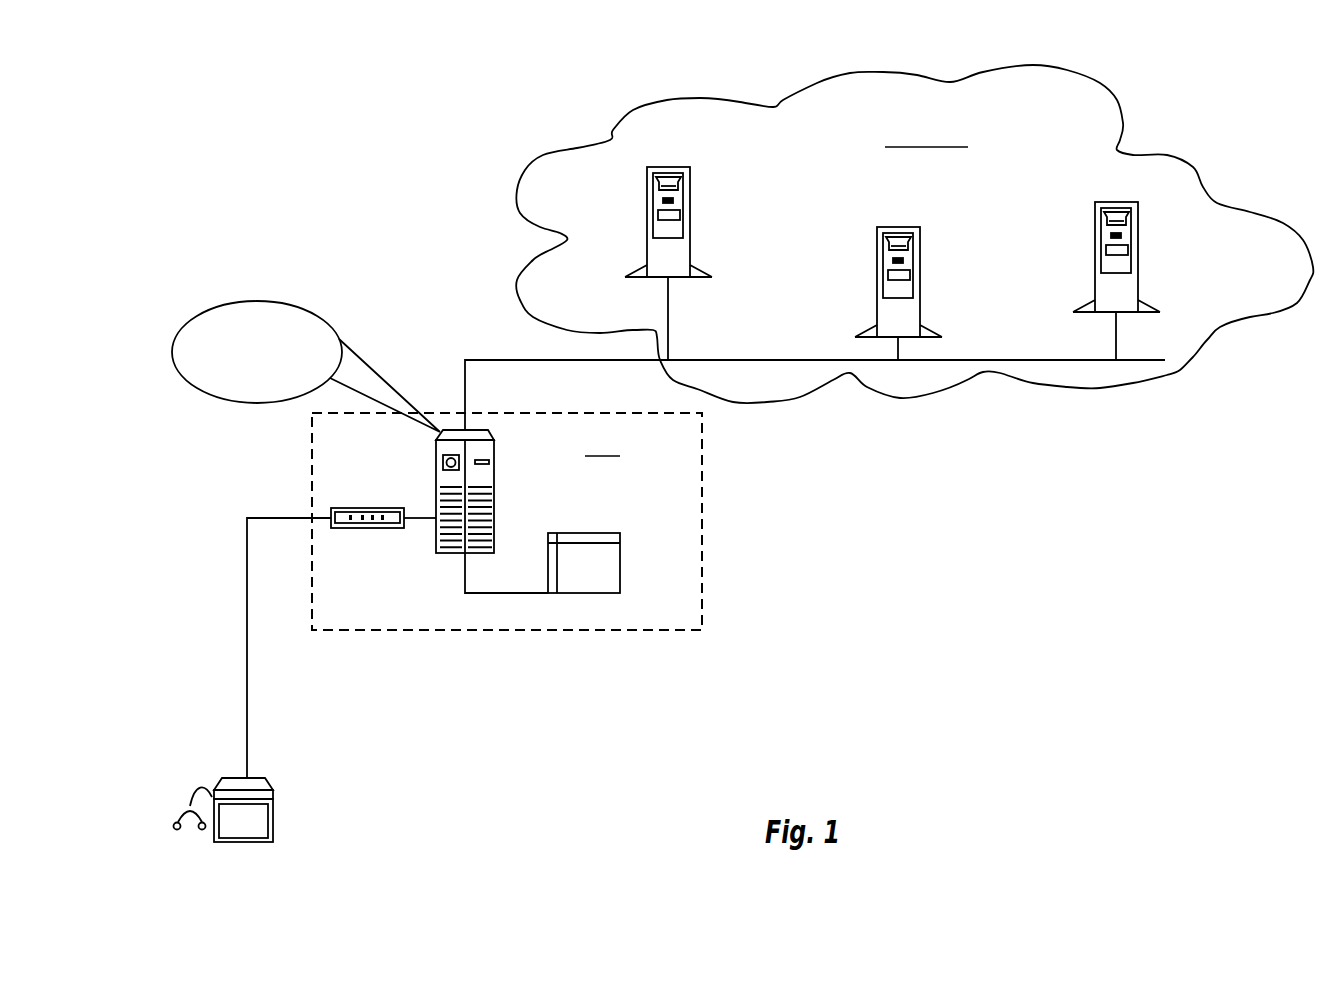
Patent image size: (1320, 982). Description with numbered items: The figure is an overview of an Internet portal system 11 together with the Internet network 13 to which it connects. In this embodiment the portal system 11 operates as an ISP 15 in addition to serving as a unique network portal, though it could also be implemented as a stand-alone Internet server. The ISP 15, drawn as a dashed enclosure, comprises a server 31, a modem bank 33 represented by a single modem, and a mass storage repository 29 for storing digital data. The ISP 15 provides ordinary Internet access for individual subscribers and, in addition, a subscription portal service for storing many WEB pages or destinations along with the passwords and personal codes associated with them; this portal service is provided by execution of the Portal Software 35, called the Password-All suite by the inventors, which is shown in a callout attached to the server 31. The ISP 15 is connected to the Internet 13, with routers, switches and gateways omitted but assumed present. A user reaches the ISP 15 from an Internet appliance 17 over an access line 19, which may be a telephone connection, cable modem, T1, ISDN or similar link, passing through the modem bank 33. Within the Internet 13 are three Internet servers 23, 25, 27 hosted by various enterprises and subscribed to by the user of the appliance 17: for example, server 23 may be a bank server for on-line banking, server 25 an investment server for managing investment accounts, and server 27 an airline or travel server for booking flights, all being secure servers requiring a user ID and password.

The Internet portal system 11 is at (358, 208).
The Internet network 13 is at (1180, 137).
The ISP 15 is at (703, 567).
The Internet appliance 17 is at (273, 825).
The access line 19 is at (247, 645).
The Internet server 23 is at (690, 238).
The Internet server 25 is at (920, 293).
The Internet server 27 is at (1138, 272).
The mass storage repository 29 is at (620, 573).
The server 31 is at (436, 502).
The modem bank 33 is at (341, 528).
The Portal Software 35 is at (259, 410).